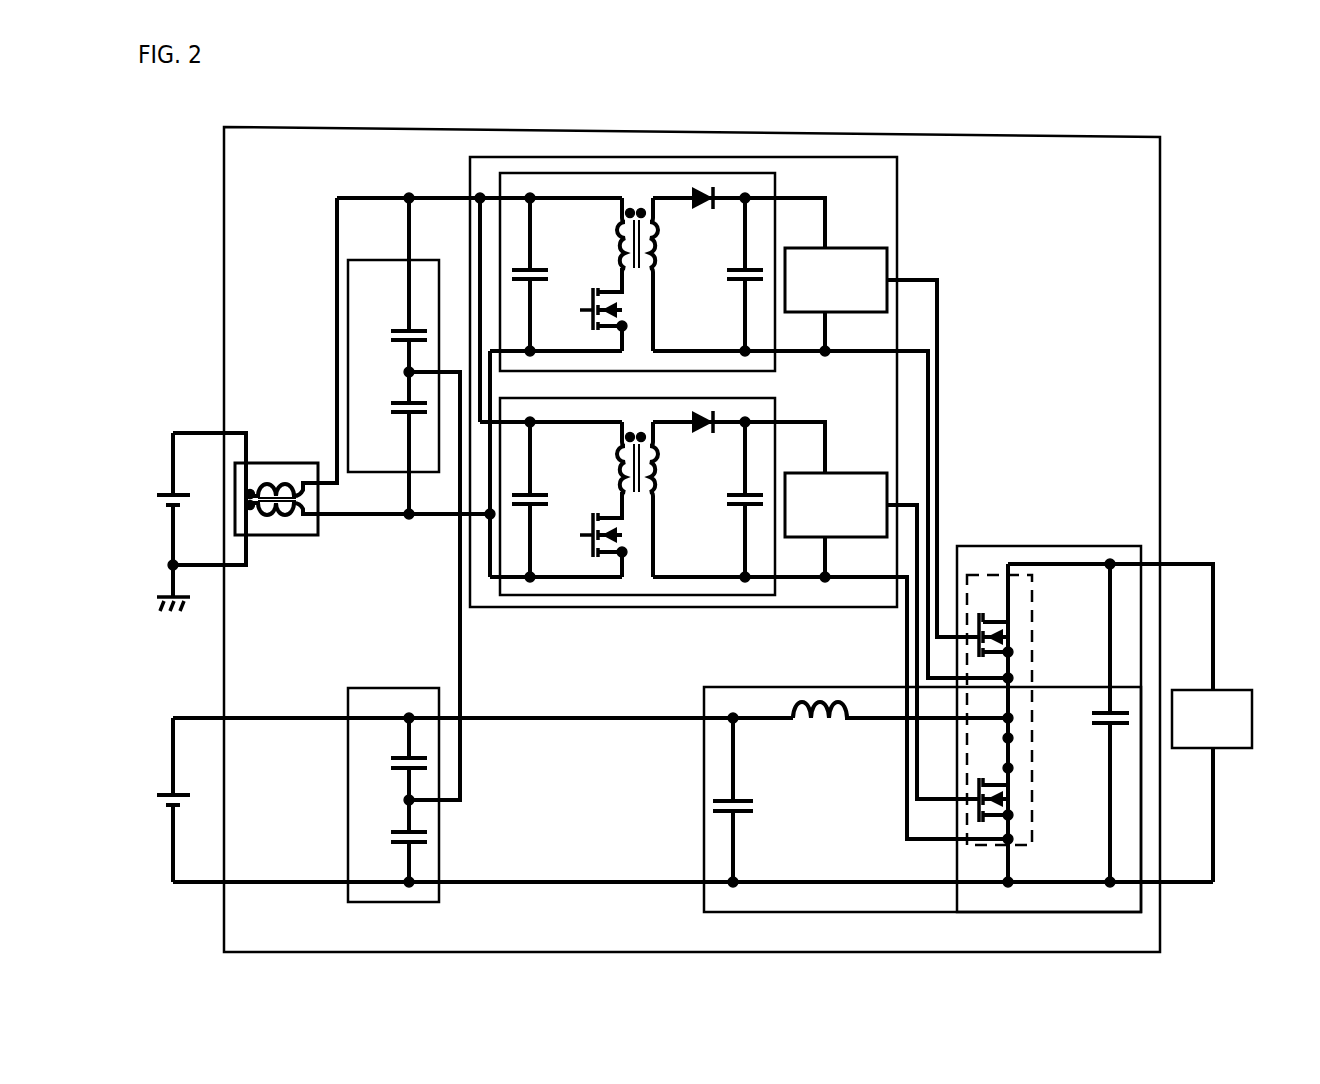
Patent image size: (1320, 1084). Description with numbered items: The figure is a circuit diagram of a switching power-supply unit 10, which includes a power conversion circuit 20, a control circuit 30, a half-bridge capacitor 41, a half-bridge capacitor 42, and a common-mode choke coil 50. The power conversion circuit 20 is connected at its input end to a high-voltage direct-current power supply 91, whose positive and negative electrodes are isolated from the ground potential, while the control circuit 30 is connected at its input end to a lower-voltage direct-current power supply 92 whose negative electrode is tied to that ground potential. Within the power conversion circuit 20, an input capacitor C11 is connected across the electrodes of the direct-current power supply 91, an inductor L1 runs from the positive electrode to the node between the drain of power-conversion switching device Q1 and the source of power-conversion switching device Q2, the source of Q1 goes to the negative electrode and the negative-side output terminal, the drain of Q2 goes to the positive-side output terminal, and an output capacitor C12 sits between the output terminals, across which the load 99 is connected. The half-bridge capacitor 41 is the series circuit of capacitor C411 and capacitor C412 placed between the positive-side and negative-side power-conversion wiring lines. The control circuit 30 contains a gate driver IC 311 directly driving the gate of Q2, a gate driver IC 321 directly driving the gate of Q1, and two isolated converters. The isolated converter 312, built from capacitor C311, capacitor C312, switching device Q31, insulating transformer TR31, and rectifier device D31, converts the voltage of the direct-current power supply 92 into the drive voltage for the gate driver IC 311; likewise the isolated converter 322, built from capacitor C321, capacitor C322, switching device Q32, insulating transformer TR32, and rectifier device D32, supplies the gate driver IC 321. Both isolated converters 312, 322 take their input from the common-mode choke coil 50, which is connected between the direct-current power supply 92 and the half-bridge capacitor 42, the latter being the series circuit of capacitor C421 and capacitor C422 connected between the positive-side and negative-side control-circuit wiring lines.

The switching power-supply unit 10 is at (1160, 168).
The power conversion circuit 20 is at (1085, 711).
The control circuit 30 is at (897, 186).
The half-bridge capacitor 41 is at (396, 778).
The half-bridge capacitor 42 is at (404, 512).
The common-mode choke coil 50 is at (290, 463).
The direct-current power supply 91 is at (162, 826).
The direct-current power supply 92 is at (161, 481).
The load 99 is at (1240, 690).
The gate driver IC 311 is at (857, 248).
The isolated converter 312 is at (749, 424).
The gate driver IC 321 is at (857, 473).
The isolated converter 322 is at (746, 617).
The capacitor C311 is at (548, 274).
The capacitor C312 is at (727, 274).
The capacitor C321 is at (548, 499).
The capacitor C322 is at (727, 499).
The capacitor C421 is at (391, 354).
The capacitor C422 is at (391, 458).
The capacitor C411 is at (391, 775).
The capacitor C412 is at (391, 857).
The input capacitor C11 is at (747, 800).
The output capacitor C12 is at (1097, 723).
The inductor L1 is at (885, 707).
The rectifier device D31 is at (703, 212).
The rectifier device D32 is at (703, 437).
The insulating transformer TR31 is at (661, 274).
The insulating transformer TR32 is at (661, 499).
The switching device Q31 is at (586, 309).
The switching device Q32 is at (586, 534).
The power-conversion switching device Q1 is at (992, 786).
The power-conversion switching device Q2 is at (992, 621).